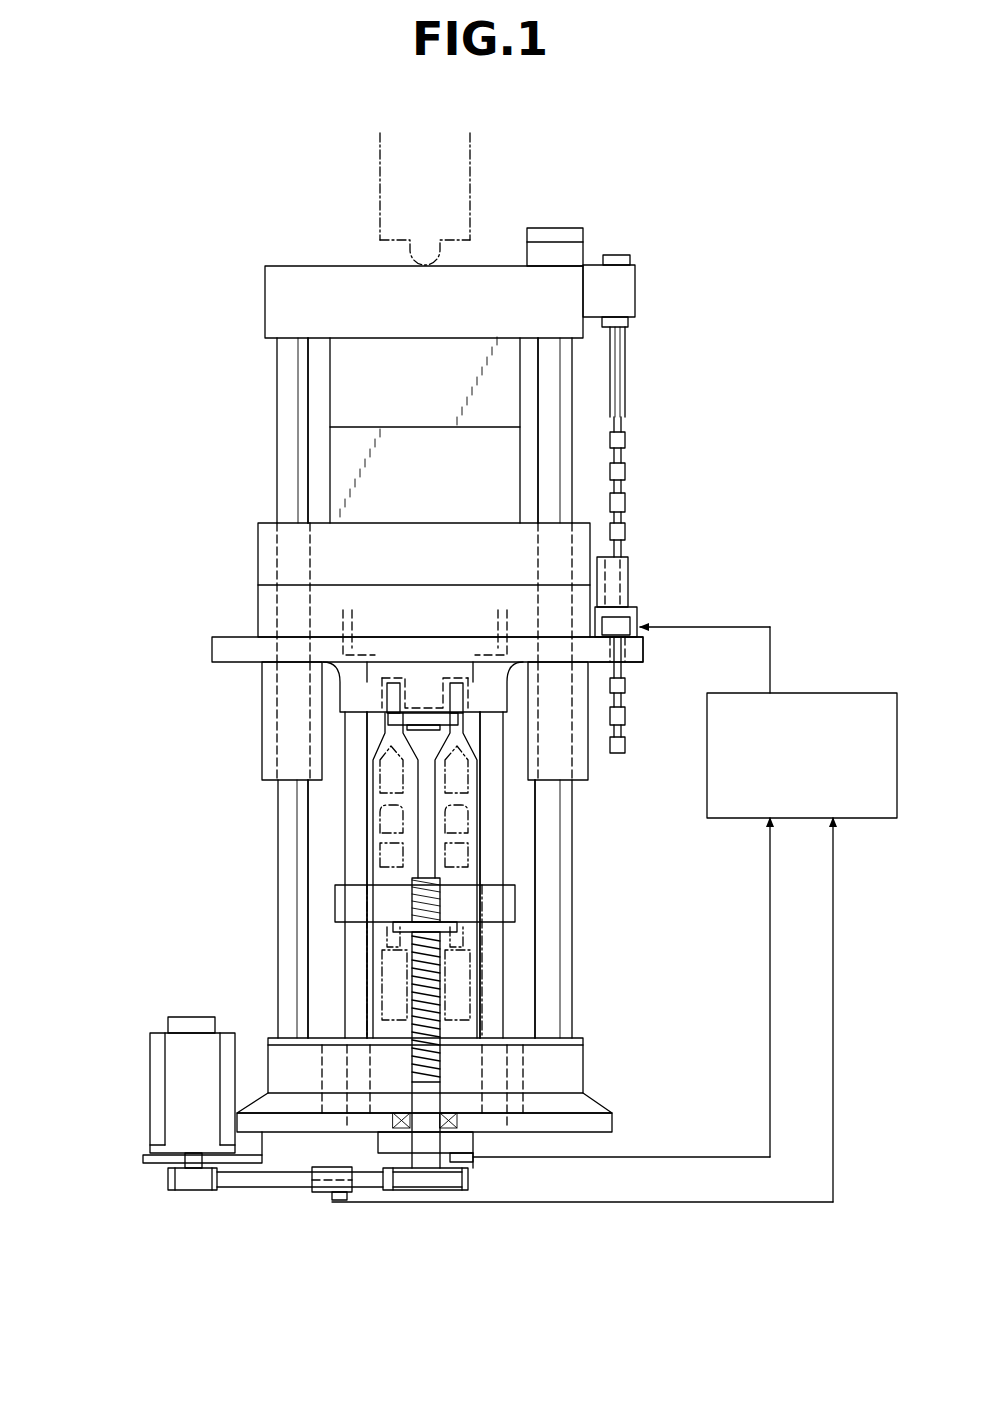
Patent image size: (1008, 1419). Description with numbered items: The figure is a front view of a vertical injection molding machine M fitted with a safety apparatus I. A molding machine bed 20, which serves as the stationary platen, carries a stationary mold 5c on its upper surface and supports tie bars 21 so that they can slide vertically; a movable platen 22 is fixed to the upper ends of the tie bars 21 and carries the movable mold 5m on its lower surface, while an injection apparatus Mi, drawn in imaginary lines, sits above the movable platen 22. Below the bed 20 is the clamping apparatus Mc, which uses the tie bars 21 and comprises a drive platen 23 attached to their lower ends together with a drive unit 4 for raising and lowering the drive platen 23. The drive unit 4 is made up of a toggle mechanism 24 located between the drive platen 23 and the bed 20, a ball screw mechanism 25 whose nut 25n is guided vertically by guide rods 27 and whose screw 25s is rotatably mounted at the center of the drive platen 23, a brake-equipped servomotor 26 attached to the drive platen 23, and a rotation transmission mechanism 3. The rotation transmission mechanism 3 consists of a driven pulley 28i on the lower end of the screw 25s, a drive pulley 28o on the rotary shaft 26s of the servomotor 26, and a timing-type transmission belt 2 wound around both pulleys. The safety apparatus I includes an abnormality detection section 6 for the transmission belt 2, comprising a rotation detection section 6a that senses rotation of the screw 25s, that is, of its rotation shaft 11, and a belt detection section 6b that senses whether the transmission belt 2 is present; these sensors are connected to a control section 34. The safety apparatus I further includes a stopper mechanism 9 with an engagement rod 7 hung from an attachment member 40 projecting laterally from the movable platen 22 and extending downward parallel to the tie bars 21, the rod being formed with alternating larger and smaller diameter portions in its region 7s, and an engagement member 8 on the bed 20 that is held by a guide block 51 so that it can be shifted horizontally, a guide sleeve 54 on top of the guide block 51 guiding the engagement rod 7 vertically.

The injection apparatus Mi is at (480, 165).
The vertical injection molding machine M is at (705, 210).
The movable platen 22 is at (265, 310).
The attachment member 40 is at (635, 290).
The engagement rod 7 is at (625, 400).
The movable mold 5m is at (330, 400).
The safety apparatus I is at (735, 534).
The stationary mold 5c is at (330, 490).
The rod scale sections 7s is at (625, 512).
The stopper mechanism 9 is at (692, 555).
The guide sleeve 54 is at (628, 577).
The engagement member 8 is at (637, 620).
The molding machine bed 20 is at (212, 637).
The guide block 51 is at (645, 652).
The control section 34 is at (860, 693).
The tie bars 21 is at (277, 808).
The guide rods 27 is at (345, 830).
The toggle mechanism 24 is at (488, 830).
The ball screw mechanism 25 is at (431, 951).
The nut 25n is at (440, 882).
The screw 25s is at (445, 1000).
The drive unit 4 is at (163, 1079).
The servomotor 26 is at (150, 1040).
The rotary shaft 26s is at (165, 1165).
The drive platen 23 is at (583, 1078).
The clamping apparatus Mc is at (487, 1081).
The rotation transmission mechanism 3 is at (337, 1193).
The drive pulley 28o is at (185, 1190).
The transmission belt 2 is at (290, 1190).
The belt detection section 6b is at (305, 1205).
The driven pulley 28i is at (450, 1190).
The rotation shaft 11 is at (415, 1162).
The abnormality detection section 6 is at (483, 1167).
The rotation detection section 6a is at (477, 1173).